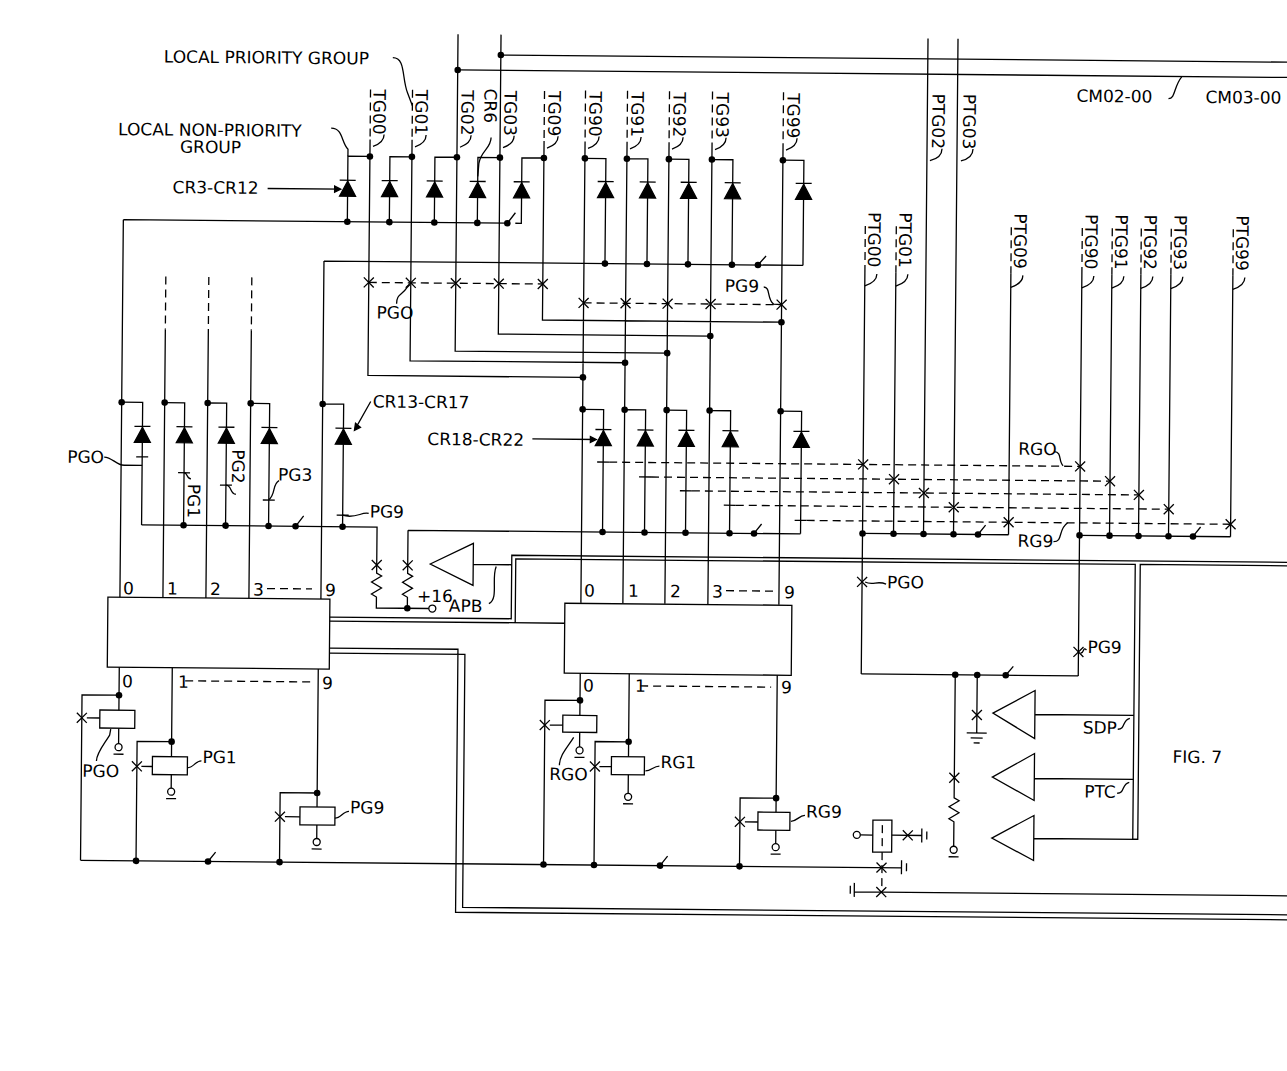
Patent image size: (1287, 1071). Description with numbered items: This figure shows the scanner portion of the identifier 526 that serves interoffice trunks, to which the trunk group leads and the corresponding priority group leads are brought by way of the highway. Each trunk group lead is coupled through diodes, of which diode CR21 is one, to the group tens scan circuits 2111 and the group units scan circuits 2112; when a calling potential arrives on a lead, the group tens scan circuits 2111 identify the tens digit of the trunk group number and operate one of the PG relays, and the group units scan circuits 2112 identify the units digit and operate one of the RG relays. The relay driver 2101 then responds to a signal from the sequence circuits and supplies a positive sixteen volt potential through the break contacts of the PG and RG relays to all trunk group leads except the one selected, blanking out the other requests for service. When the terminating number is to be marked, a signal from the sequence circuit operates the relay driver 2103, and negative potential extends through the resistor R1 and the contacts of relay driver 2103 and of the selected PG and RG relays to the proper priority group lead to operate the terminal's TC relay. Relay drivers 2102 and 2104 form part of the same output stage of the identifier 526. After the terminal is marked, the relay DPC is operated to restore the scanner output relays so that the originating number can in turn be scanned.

The relay driver 2101 is at (475, 552).
The relay driver 2102 is at (1033, 689).
The relay driver 2103 is at (1033, 752).
The relay driver 2104 is at (1033, 815).
The group tens scan circuits 2111 is at (198, 656).
The group units scan circuits 2112 is at (657, 657).
The identifier 526 is at (1131, 162).
The resistor R1 is at (961, 810).
The diode CR21 is at (730, 430).
The relay DPC is at (884, 818).